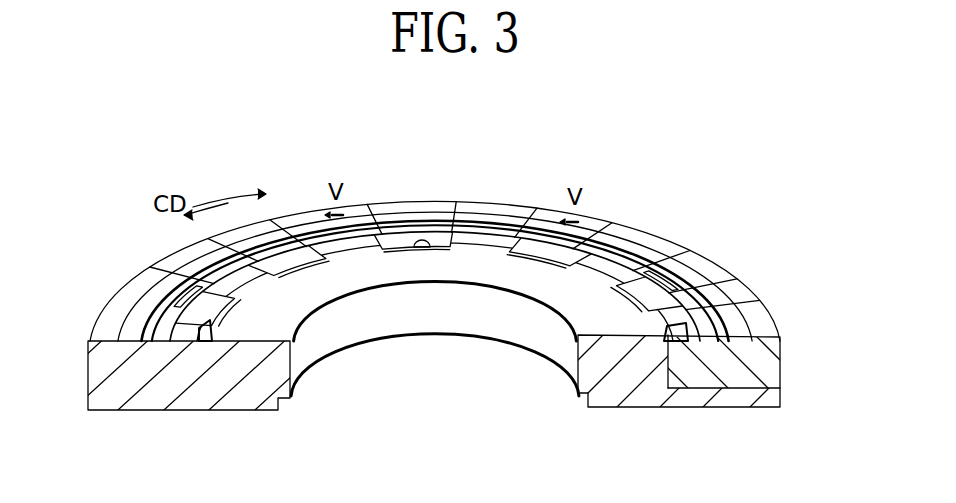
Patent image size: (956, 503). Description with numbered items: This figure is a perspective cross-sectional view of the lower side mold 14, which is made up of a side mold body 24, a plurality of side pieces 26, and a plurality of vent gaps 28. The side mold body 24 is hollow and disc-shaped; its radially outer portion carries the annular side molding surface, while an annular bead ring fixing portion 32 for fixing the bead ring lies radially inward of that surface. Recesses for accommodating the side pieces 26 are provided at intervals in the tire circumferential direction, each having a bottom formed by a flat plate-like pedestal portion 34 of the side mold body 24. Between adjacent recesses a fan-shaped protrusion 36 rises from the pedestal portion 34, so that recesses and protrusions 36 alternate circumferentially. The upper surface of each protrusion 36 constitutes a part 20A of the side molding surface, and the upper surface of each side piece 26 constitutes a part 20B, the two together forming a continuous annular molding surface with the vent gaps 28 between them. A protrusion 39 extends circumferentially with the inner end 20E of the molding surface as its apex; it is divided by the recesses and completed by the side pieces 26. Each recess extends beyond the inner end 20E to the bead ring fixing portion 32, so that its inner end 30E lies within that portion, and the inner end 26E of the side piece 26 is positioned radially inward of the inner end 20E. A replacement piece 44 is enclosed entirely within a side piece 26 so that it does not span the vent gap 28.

The side mold 14 is at (448, 137).
The side piece 26 is at (267, 220).
The protrusion 36 is at (313, 210).
The vent gap 28 is at (530, 233).
The protrusion 39 is at (473, 237).
The replacement piece 44 is at (678, 257).
The inner end in the tire radial direction of the side molding surface 20E is at (610, 247).
The part of the side molding surface 20A is at (630, 233).
The part of the side molding surface 20B is at (710, 263).
The inner end in the tire radial direction of the recess 30E is at (428, 250).
The bead ring fixing portion 32 is at (530, 290).
The side mold body 24 is at (335, 338).
The inner end in the tire radial direction of the side piece 26E is at (199, 318).
The pedestal portion 34 is at (717, 400).